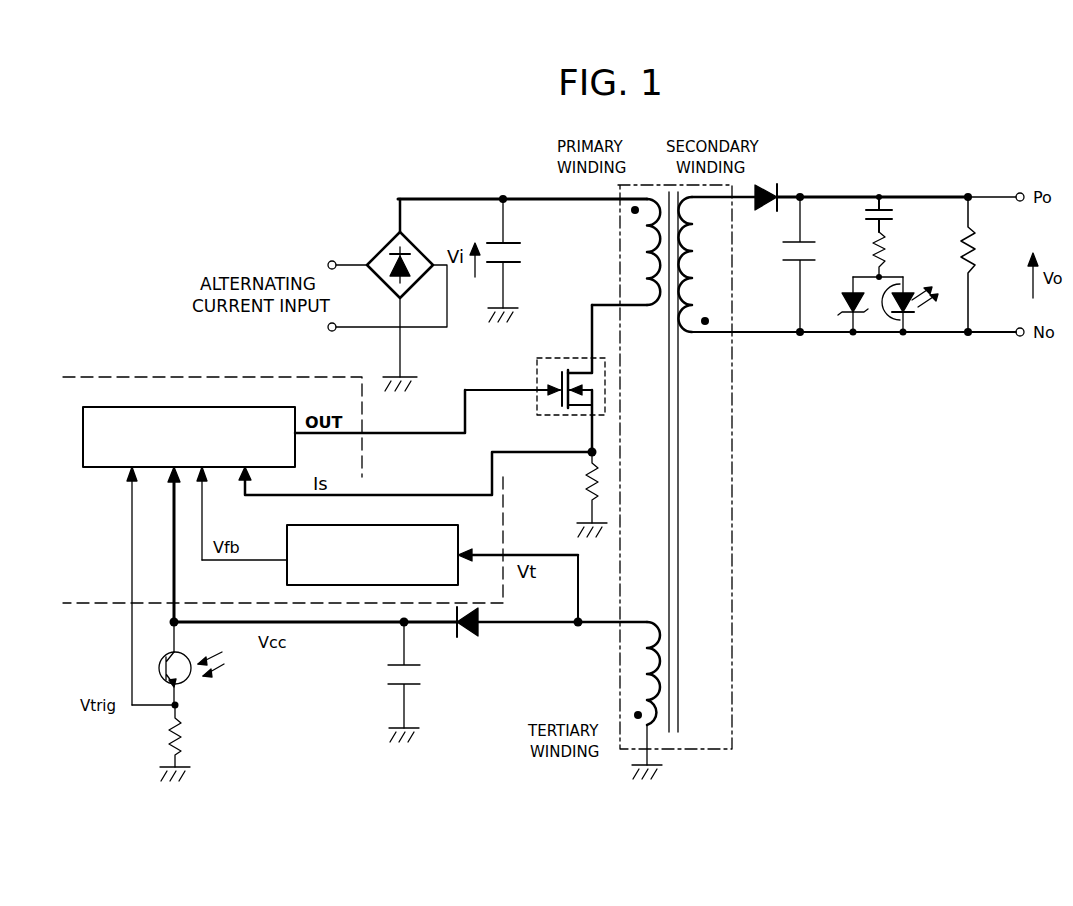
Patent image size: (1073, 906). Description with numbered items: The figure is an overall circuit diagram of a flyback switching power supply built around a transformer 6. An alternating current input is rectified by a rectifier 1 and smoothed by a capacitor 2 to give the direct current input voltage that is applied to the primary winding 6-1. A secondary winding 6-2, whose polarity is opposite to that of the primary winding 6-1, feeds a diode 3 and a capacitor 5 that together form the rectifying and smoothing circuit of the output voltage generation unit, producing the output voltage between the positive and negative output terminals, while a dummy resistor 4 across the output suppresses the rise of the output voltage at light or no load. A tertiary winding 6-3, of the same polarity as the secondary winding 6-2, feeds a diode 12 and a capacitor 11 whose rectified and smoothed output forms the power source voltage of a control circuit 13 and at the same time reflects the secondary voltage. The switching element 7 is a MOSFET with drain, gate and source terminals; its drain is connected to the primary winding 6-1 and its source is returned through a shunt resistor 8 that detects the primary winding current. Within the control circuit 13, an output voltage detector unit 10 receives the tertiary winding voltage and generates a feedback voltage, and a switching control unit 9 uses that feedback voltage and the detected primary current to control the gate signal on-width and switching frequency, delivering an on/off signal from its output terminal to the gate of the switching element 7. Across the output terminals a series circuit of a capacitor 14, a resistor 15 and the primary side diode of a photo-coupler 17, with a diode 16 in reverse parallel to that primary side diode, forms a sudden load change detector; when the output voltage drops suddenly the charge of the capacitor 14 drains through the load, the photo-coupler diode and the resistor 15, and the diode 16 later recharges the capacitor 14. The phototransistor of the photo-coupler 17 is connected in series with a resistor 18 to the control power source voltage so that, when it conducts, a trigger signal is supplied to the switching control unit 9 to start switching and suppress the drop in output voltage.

The rectifier circuit 1 is at (388, 242).
The smoothing capacitor 2 is at (490, 232).
The diode 3 is at (788, 185).
The dummy resistor 4 is at (980, 215).
The capacitor 5 is at (810, 232).
The transformer 6 is at (684, 482).
The primary winding 6-1 is at (640, 240).
The secondary winding 6-2 is at (708, 238).
The tertiary winding 6-3 is at (637, 657).
The switching element 7 is at (575, 358).
The shunt resistor 8 is at (585, 472).
The switching control unit 9 is at (180, 405).
The output voltage detector unit 10 is at (368, 588).
The capacitor 11 is at (378, 680).
The diode 12 is at (468, 640).
The control circuit 13 is at (222, 372).
The capacitor 14 is at (885, 203).
The resistor 15 is at (890, 258).
The diode 16 is at (845, 320).
The photo-coupler 17 is at (897, 322).
The resistor 18 is at (160, 730).